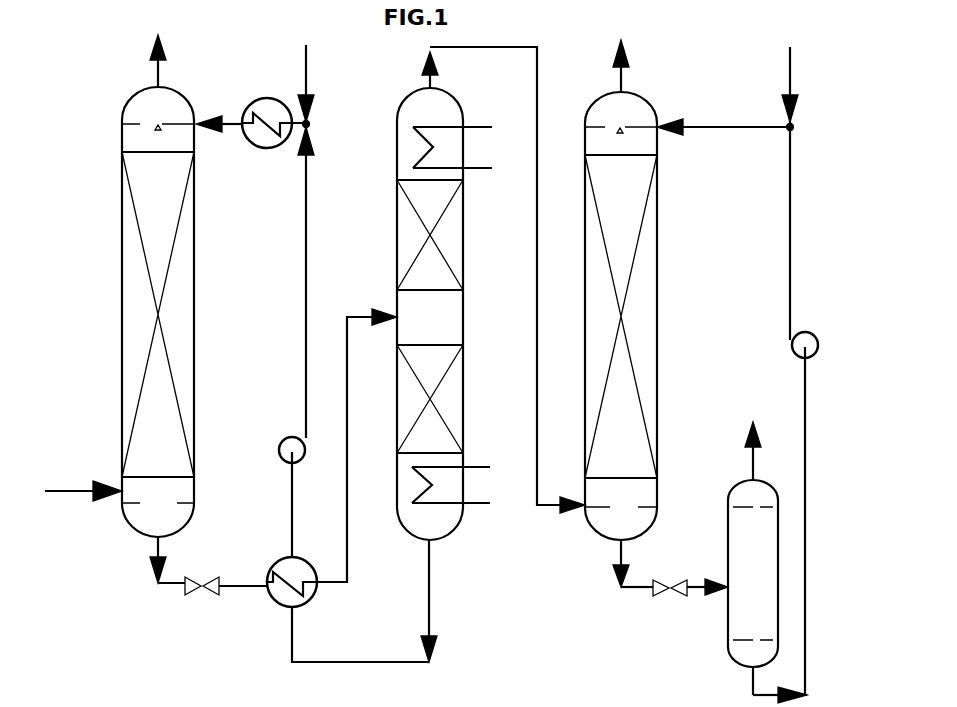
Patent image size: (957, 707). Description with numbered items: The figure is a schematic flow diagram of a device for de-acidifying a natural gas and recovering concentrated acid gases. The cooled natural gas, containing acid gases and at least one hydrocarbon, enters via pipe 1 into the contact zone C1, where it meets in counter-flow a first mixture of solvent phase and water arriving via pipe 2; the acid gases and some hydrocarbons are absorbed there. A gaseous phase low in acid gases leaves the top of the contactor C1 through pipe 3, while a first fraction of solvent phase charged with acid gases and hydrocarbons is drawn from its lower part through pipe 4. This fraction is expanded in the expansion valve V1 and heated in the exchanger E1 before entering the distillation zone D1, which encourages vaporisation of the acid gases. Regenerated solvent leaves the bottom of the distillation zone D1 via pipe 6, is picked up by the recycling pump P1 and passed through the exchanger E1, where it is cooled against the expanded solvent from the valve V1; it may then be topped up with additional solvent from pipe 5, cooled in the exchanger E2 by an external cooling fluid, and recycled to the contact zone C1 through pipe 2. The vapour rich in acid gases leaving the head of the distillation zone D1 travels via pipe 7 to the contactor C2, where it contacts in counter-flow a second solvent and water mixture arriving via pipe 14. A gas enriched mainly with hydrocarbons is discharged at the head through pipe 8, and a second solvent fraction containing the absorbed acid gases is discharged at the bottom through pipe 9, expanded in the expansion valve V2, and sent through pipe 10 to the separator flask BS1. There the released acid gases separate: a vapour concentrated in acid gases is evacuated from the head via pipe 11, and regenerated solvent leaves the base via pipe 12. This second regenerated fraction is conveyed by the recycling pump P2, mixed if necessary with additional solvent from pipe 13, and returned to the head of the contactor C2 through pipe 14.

The pipe 1 is at (63, 491).
The pipe 2 is at (232, 118).
The pipe 3 is at (166, 58).
The pipe 4 is at (153, 572).
The pipe 5 is at (307, 55).
The pipe 6 is at (337, 660).
The pipe 7 is at (428, 60).
The pipe 8 is at (636, 57).
The pipe 9 is at (617, 592).
The pipe 10 is at (712, 593).
The pipe 11 is at (752, 460).
The pipe 12 is at (804, 398).
The pipe 13 is at (788, 66).
The pipe 14 is at (693, 130).
The contact zone C1 is at (195, 272).
The contactor C2 is at (658, 266).
The distillation zone D1 is at (464, 255).
The exchanger E1 is at (295, 529).
The exchanger E2 is at (274, 110).
The recycling pump P1 is at (291, 439).
The recycling pump P2 is at (806, 333).
The expansion valve V1 is at (202, 572).
The expansion valve V2 is at (670, 577).
The separator flask BS1 is at (727, 508).